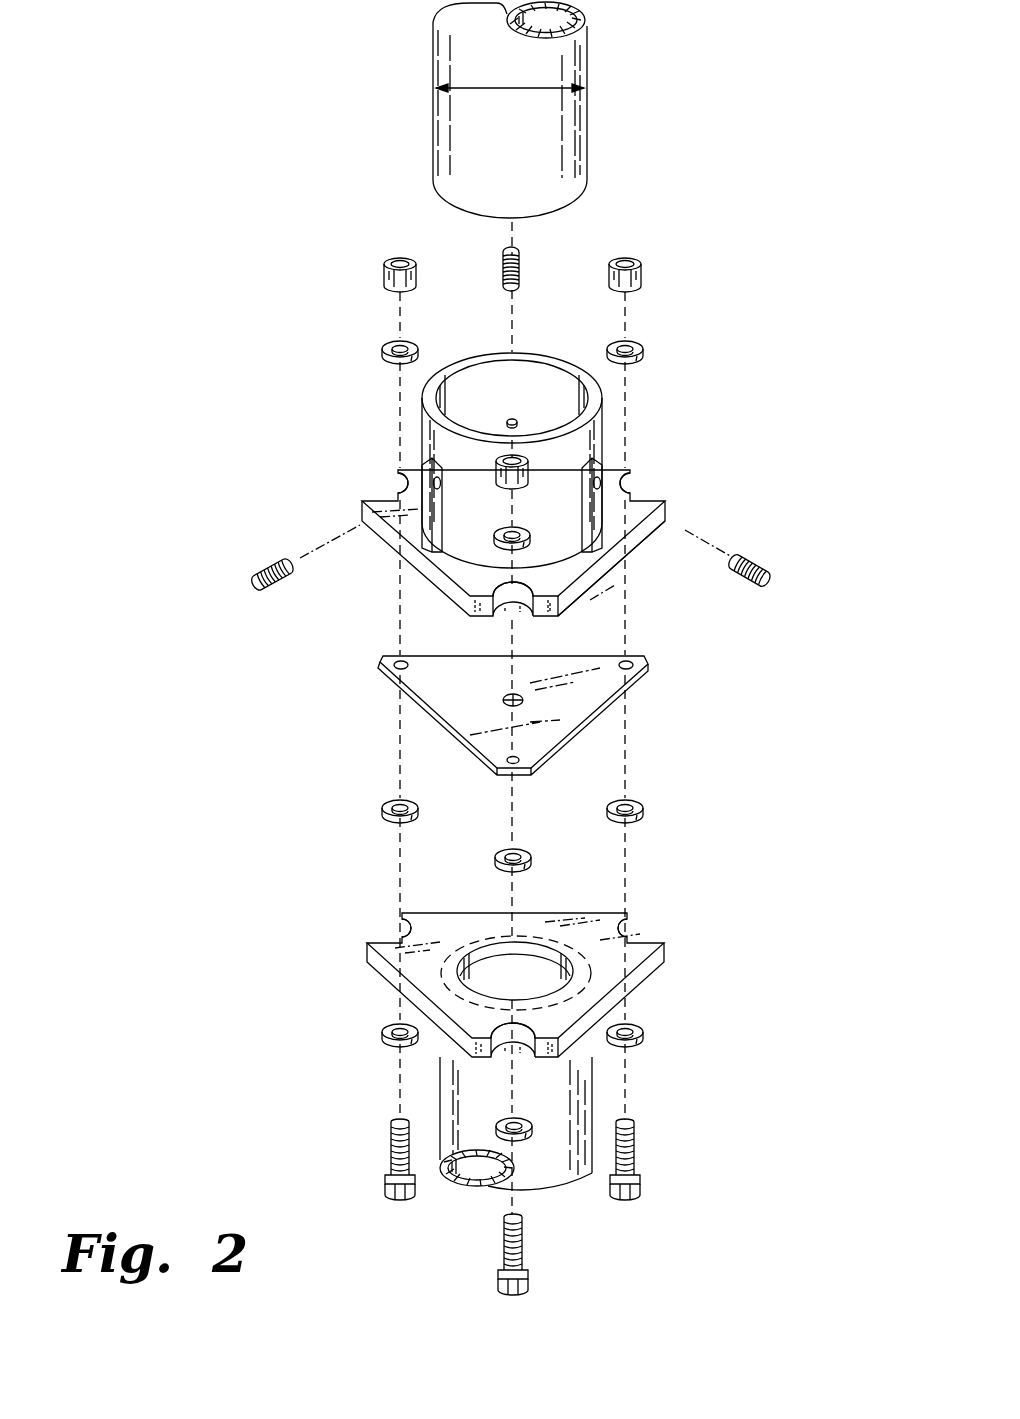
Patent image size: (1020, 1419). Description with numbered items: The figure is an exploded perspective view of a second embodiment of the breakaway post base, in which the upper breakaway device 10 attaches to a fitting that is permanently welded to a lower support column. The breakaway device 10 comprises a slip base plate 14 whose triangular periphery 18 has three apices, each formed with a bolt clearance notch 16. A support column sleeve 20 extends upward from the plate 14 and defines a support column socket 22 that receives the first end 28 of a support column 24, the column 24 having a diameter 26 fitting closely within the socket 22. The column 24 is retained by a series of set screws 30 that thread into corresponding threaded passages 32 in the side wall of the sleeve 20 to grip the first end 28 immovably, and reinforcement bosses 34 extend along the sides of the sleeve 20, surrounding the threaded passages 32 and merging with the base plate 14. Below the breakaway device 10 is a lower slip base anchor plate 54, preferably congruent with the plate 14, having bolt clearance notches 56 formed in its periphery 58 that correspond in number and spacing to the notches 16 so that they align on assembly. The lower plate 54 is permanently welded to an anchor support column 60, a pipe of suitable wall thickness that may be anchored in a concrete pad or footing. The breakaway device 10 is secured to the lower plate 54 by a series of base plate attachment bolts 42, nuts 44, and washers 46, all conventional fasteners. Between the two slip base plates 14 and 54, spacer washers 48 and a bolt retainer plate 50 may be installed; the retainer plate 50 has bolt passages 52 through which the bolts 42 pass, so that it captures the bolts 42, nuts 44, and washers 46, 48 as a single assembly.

The breakaway device 10 is at (228, 474).
The slip base plate 14 is at (432, 588).
The bolt clearance notch 16 is at (395, 480).
The triangular periphery 18 is at (640, 582).
The support column sleeve 20 is at (474, 357).
The support column socket 22 is at (540, 372).
The support column 24 is at (433, 50).
The diameter 26 is at (492, 88).
The first end 28 is at (588, 186).
The set screws 30 is at (501, 268).
The threaded passages 32 is at (509, 421).
The reinforcement bosses 34 is at (420, 552).
The base plate attachment bolts 42 is at (642, 1190).
The nuts 44 is at (392, 264).
The washers 46 is at (385, 348).
The spacer washers 48 is at (503, 852).
The bolt retainer plate 50 is at (438, 691).
The bolt passages 52 is at (393, 662).
The lower slip base anchor plate 54 is at (392, 972).
The bolt clearance notches 56 is at (400, 932).
The periphery 58 is at (650, 985).
The anchor support column 60 is at (595, 1092).